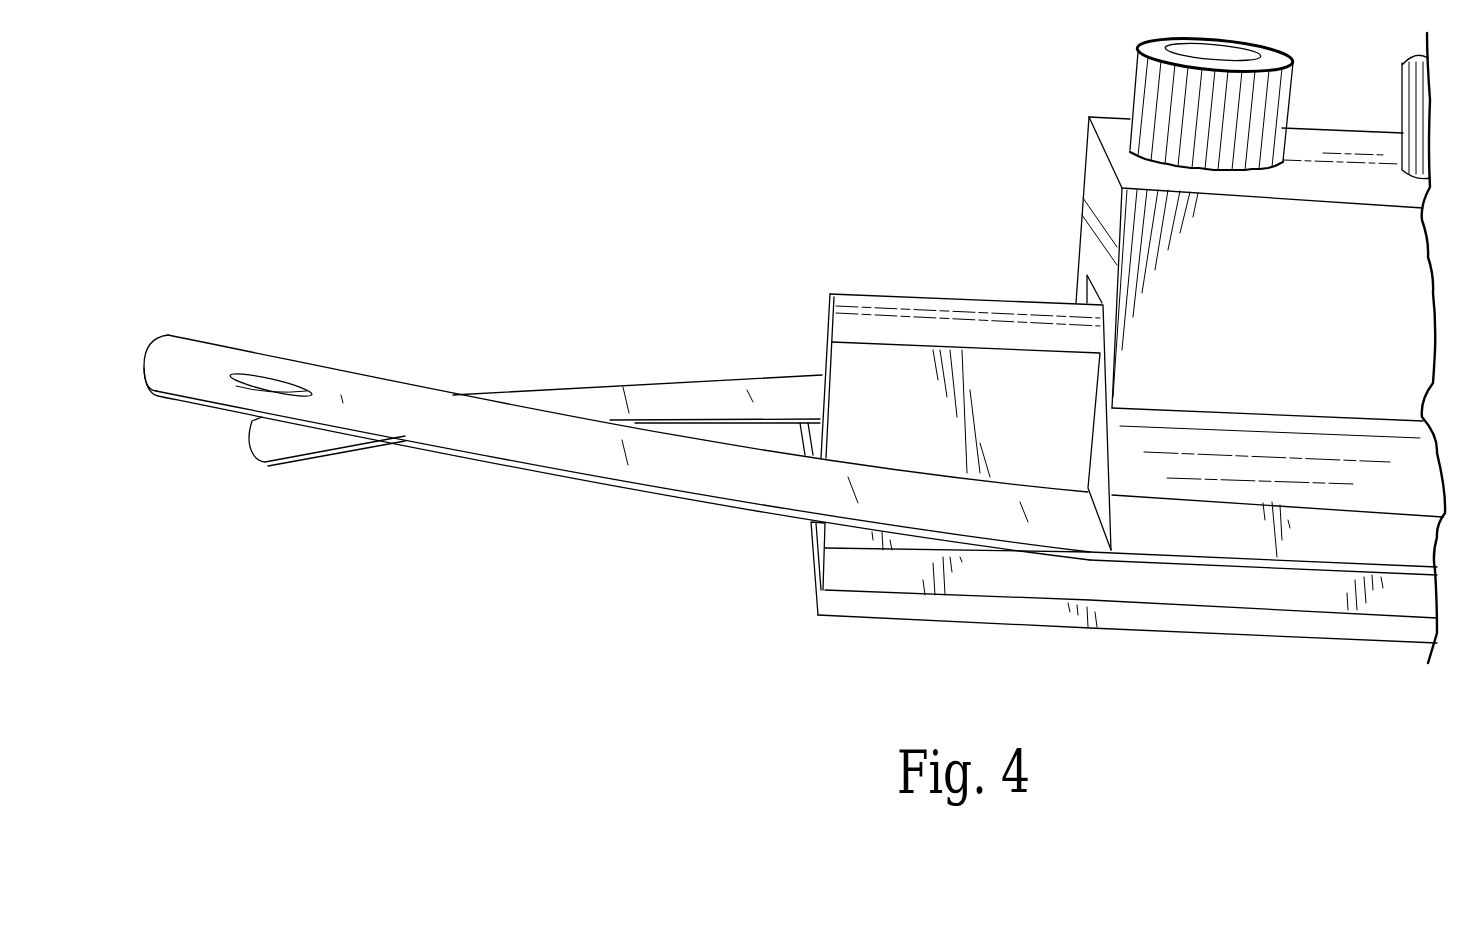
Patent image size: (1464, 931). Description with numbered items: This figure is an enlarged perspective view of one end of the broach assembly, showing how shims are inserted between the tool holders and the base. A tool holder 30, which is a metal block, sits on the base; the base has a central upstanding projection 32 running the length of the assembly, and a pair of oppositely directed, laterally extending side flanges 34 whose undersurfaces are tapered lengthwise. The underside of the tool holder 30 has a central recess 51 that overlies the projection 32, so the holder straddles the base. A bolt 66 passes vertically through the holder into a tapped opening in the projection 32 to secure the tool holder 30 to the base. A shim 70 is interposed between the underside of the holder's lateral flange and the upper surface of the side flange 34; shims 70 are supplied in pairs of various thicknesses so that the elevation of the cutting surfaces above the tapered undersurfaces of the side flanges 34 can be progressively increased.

The tool holder 30 is at (1080, 172).
The central upstanding projection 32 is at (887, 323).
The side flange 34 is at (1260, 596).
The central recess 51 is at (1080, 295).
The bolt 66 is at (1160, 97).
The shim 70 is at (470, 434).